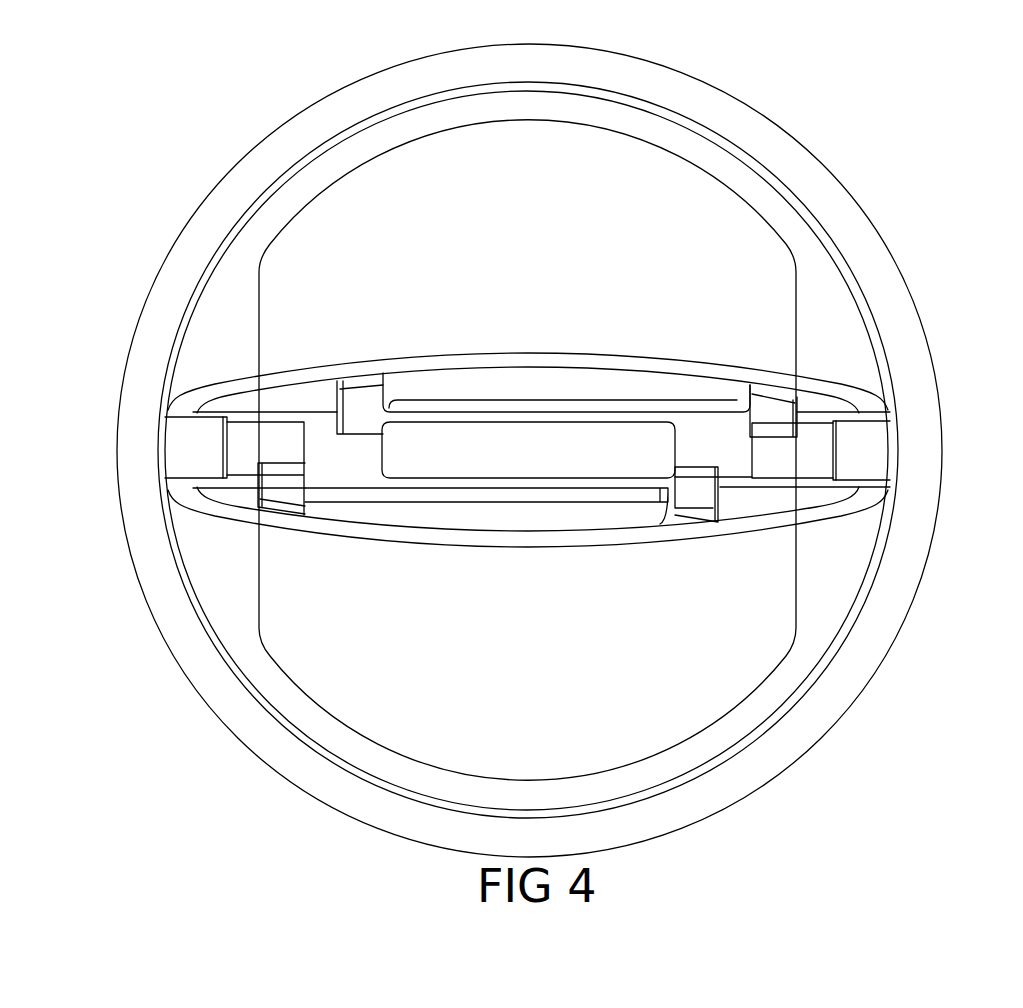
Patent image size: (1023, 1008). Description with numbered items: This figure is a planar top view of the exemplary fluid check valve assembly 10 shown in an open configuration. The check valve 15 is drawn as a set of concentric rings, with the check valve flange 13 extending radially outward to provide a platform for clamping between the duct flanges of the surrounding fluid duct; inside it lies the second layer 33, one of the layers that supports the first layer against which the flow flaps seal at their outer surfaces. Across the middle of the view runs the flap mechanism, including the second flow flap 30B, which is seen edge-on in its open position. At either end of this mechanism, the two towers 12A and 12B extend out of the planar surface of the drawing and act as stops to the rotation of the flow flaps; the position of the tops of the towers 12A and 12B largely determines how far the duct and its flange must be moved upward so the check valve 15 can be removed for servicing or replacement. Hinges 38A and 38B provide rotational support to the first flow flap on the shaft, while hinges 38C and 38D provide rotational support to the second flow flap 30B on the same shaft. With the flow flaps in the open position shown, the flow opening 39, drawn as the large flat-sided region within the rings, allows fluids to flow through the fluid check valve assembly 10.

The fluid check valve assembly 10 is at (937, 283).
The check valve flange 13 is at (360, 95).
The check valve 15 is at (235, 161).
The second layer 33 is at (651, 128).
The second flow flap 30B is at (827, 390).
The tower 12A is at (875, 450).
The tower 12B is at (182, 448).
The hinge 38A is at (282, 483).
The hinge 38B is at (690, 500).
The hinge 38C is at (365, 404).
The hinge 38D is at (773, 418).
The flow opening 39 is at (378, 681).